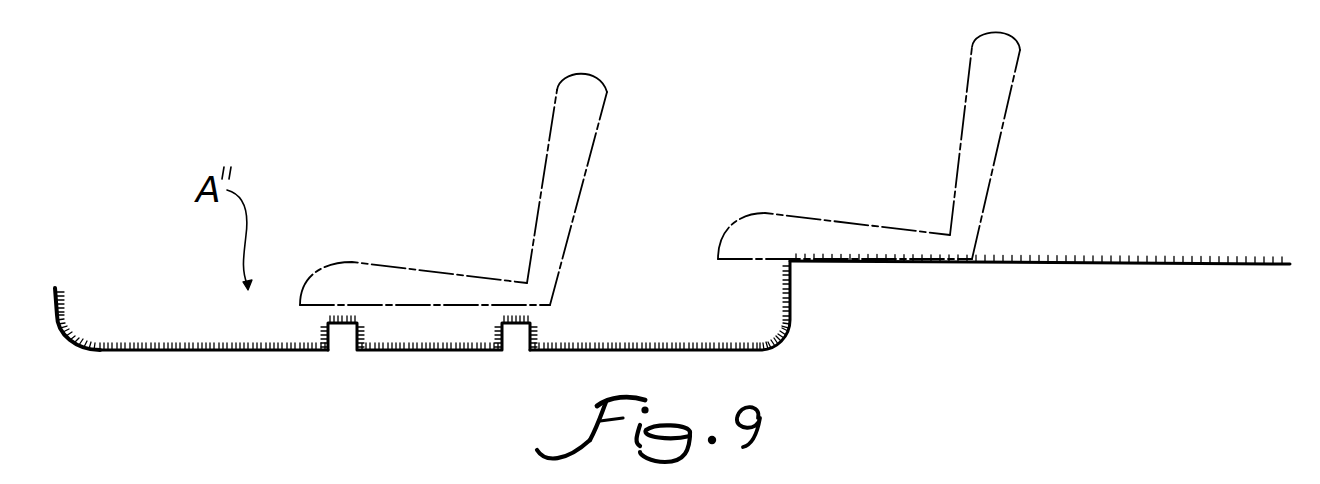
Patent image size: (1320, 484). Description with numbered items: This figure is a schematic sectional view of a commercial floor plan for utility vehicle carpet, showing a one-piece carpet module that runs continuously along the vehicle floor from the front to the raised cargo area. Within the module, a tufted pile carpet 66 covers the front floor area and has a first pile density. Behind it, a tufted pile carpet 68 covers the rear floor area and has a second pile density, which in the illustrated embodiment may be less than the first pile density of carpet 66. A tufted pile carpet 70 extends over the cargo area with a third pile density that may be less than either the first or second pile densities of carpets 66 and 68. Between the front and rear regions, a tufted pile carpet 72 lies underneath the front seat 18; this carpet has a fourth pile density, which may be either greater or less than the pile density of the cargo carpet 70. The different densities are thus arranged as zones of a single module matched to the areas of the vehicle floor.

The front seat 18 is at (605, 105).
The tufted pile carpet in the front floor area 66 is at (182, 345).
The tufted pile carpet in the rear floor area 68 is at (638, 346).
The tufted pile carpet in the cargo area 70 is at (1131, 260).
The tufted pile carpet underneath front seat 72 is at (430, 346).